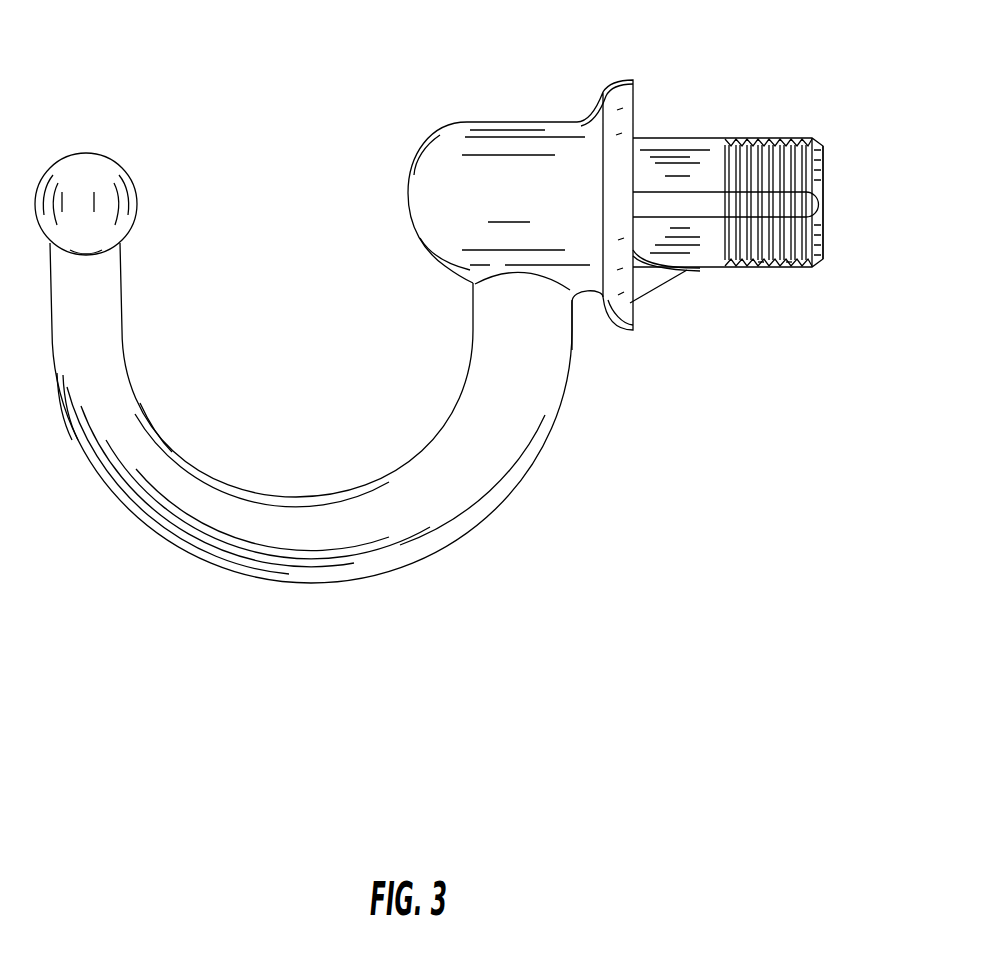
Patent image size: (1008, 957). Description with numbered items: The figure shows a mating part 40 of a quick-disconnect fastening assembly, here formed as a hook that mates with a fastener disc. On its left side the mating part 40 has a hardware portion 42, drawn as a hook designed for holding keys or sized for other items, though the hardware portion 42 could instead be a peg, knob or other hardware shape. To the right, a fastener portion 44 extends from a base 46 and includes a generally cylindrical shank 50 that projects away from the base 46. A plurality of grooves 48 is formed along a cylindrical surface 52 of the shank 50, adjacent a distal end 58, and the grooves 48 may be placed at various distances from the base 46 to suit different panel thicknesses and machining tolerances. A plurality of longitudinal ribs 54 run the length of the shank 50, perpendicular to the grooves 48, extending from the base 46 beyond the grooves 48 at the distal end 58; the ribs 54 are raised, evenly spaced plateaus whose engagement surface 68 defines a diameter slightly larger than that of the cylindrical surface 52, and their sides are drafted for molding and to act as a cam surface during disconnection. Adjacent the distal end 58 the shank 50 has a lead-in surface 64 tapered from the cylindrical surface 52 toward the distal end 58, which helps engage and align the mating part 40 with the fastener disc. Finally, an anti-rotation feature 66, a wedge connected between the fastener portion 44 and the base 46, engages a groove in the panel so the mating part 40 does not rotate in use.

The mating part 40 is at (370, 136).
The hardware portion 42 is at (593, 560).
The fastener portion 44 is at (843, 560).
The base 46 is at (634, 90).
The grooves 48 is at (745, 139).
The shank 50 is at (790, 270).
The cylindrical surface 52 is at (670, 150).
The longitudinal ribs 54 is at (762, 270).
The distal end 58 is at (824, 232).
The lead-in surface 64 is at (828, 170).
The anti-rotation feature 66 is at (641, 284).
The engagement surface 68 is at (698, 200).